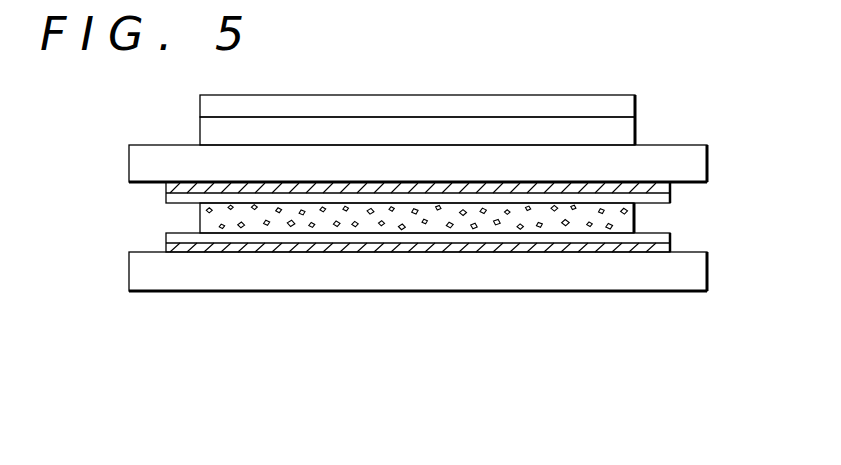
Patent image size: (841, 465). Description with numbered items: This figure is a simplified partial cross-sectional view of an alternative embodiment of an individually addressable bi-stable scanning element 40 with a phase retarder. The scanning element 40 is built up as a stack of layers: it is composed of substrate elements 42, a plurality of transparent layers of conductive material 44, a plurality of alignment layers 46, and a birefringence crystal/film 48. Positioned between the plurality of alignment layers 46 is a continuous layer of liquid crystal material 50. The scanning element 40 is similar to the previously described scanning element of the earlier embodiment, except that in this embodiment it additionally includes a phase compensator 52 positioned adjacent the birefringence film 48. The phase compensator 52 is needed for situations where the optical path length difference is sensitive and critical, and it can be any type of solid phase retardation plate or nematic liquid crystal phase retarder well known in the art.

The scanning element 40 is at (684, 395).
The substrate elements 42 is at (688, 165).
The transparent layers of conductive material 44 is at (672, 249).
The alignment layers 46 is at (175, 198).
The birefringence crystal/film 48 is at (615, 132).
The liquid crystal material 50 is at (272, 223).
The phase compensator 52 is at (620, 105).